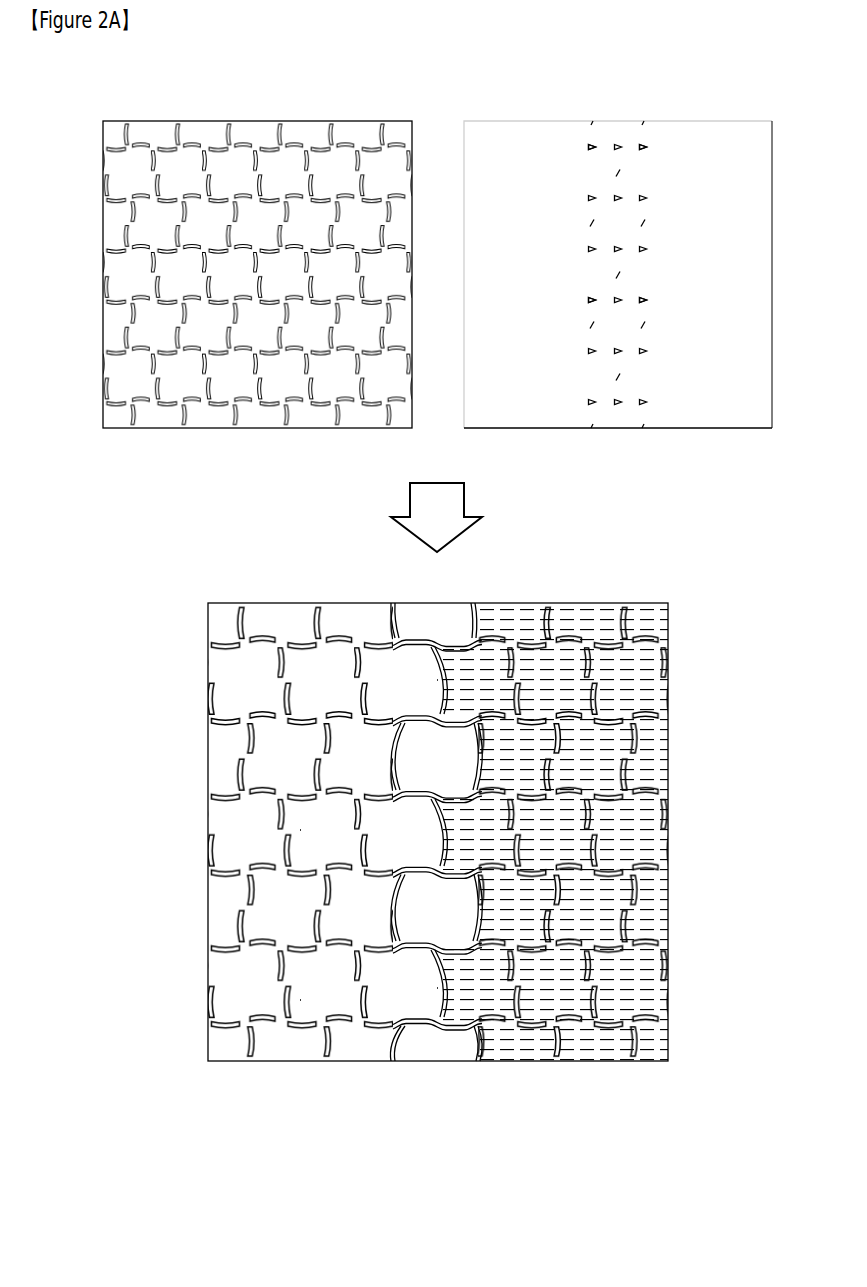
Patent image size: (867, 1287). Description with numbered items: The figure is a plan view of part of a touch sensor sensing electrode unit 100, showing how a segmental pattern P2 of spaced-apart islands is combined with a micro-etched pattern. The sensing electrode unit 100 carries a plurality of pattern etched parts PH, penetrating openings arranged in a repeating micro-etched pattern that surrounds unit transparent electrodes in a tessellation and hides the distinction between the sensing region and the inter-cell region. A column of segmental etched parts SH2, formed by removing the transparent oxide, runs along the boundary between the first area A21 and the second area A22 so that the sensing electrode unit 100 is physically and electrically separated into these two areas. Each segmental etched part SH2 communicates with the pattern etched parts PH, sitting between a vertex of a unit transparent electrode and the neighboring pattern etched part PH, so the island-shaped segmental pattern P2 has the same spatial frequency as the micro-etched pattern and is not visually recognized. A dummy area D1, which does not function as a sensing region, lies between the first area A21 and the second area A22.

The pattern etched part PH is at (278, 133).
The segmental etched part SH2 is at (645, 197).
The segmental pattern P2 is at (648, 107).
The sensing electrode unit 100 is at (199, 664).
The first area A21 is at (397, 1070).
The dummy area D1 is at (475, 1070).
The second area A22 is at (668, 1070).